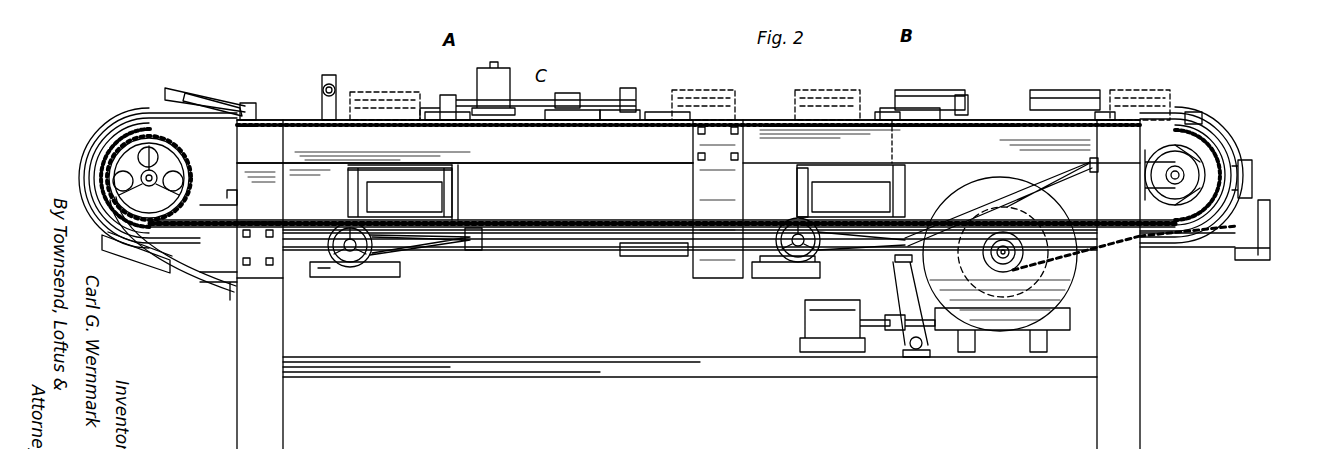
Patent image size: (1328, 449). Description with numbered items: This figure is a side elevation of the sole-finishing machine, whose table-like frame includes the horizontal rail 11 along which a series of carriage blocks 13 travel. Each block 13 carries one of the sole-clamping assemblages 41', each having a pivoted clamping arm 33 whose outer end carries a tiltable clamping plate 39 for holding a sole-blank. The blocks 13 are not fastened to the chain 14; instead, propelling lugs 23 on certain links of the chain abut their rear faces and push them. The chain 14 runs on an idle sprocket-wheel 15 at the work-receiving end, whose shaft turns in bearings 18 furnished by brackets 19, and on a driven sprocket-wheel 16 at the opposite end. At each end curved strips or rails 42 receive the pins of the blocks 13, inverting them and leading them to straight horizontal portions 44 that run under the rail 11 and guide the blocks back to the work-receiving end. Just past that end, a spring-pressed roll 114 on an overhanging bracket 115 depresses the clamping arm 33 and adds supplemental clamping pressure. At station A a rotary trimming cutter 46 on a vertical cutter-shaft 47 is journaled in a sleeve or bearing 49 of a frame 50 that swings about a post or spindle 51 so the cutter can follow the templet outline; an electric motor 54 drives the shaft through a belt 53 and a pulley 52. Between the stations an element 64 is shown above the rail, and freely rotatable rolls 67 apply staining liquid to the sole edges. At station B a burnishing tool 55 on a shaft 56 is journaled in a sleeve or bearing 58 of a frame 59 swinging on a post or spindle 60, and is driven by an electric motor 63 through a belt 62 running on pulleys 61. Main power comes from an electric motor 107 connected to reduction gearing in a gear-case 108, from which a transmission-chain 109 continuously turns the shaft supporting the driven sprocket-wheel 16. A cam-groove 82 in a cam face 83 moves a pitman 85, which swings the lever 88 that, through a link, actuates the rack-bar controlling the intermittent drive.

The rail 11 is at (303, 120).
The block 13 is at (440, 118).
The chain 14 is at (595, 220).
The idle sprocket-wheel 15 is at (171, 175).
The driven sprocket-wheel 16 is at (1245, 162).
The bearings 18 is at (139, 175).
The brackets 19 is at (205, 205).
The propelling lugs 23 is at (645, 220).
The clamping arm 33 is at (200, 92).
The clamping plate 39 is at (170, 92).
The sole-clamping assemblages 41' is at (768, 149).
The curved strips or rails 42 is at (125, 112).
The straight horizontal portions 44 is at (572, 250).
The trimming cutter 46 is at (445, 100).
The cutter-shaft 47 is at (455, 168).
The sleeve or bearing 49 is at (460, 208).
The frame 50 is at (338, 185).
The post or spindle 51 is at (350, 199).
The pulley 52 is at (475, 250).
The belt 53 is at (400, 250).
The electric motor 54 is at (342, 262).
The burnishing tool 55 is at (905, 112).
The shaft 56 is at (890, 143).
The sleeve or bearing 58 is at (905, 185).
The frame 59 is at (790, 190).
The post or spindle 60 is at (812, 200).
The pulleys 61 is at (915, 265).
The belt 62 is at (848, 252).
The electric motor 63 is at (788, 262).
The cylinder 64 is at (508, 68).
The rolls 67 is at (556, 118).
The cam-groove 82 is at (1190, 112).
The face 83 is at (1180, 140).
The pitman 85 is at (992, 212).
The lever 88 is at (896, 290).
The electric motor 107 is at (815, 325).
The gear-case 108 is at (1003, 345).
The transmission-chain 109 is at (1115, 262).
The spring-pressed roll 114 is at (336, 92).
The overhanging bracket 115 is at (320, 100).